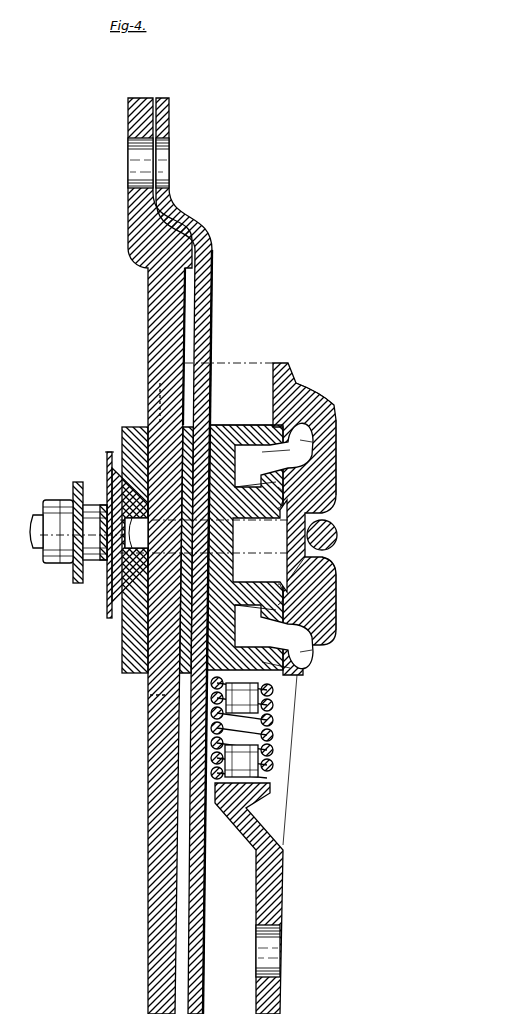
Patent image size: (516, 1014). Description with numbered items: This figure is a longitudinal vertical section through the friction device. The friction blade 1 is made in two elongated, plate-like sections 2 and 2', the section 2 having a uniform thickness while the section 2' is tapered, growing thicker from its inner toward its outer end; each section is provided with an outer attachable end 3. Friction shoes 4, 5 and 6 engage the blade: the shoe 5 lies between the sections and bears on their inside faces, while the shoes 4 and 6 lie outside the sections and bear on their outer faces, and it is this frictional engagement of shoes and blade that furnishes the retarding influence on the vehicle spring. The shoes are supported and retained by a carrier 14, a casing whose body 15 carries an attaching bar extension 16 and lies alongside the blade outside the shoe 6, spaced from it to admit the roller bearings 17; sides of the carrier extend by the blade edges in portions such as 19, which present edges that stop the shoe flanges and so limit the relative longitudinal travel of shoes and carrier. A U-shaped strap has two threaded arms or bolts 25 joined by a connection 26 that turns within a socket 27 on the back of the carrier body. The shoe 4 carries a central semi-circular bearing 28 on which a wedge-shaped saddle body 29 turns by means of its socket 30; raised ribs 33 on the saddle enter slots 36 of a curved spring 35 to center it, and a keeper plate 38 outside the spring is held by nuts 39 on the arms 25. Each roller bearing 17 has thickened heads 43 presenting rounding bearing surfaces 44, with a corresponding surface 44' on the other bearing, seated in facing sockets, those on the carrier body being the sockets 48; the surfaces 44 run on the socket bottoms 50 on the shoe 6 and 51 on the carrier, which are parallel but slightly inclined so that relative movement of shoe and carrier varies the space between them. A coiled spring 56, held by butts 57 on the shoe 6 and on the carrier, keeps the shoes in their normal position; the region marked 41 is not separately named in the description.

The friction blade 1 is at (205, 632).
The blade section 2 is at (191, 556).
The blade section 2' is at (155, 556).
The outer attachable end 3 is at (143, 134).
The friction shoe 4 is at (140, 428).
The friction shoe 5 is at (152, 700).
The friction shoe 6 is at (228, 385).
The carrier 14 is at (304, 665).
The body of the carrier 15 is at (292, 802).
The attaching bar extension 16 is at (282, 966).
The roller bearings 17 is at (325, 445).
The extending portion of carrier side 19 is at (158, 388).
The threaded arms or bolts 25 is at (30, 549).
The connection 26 is at (338, 535).
The socket 27 is at (328, 553).
The semi-circular bearing 28 is at (110, 596).
The saddle body 29 is at (128, 600).
The socket 30 is at (110, 451).
The raised rib portions 33 is at (85, 566).
The curved spring 35 is at (107, 476).
The slots 36 is at (88, 592).
The keeper 38 is at (77, 482).
The nuts 39 is at (55, 500).
The chamber 41 is at (205, 546).
The heads 43 is at (274, 545).
The rounding bearing surface 44 is at (359, 457).
The outer ring 44' is at (369, 602).
The sockets 48 is at (300, 440).
The socket surfaces 50 is at (236, 430).
The socket surfaces 51 is at (320, 420).
The coiled spring 56 is at (270, 730).
The butts 57 is at (262, 690).